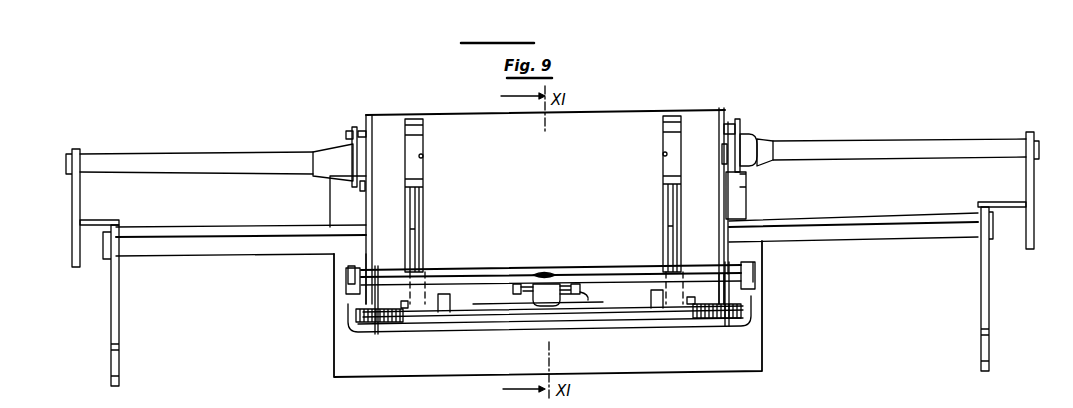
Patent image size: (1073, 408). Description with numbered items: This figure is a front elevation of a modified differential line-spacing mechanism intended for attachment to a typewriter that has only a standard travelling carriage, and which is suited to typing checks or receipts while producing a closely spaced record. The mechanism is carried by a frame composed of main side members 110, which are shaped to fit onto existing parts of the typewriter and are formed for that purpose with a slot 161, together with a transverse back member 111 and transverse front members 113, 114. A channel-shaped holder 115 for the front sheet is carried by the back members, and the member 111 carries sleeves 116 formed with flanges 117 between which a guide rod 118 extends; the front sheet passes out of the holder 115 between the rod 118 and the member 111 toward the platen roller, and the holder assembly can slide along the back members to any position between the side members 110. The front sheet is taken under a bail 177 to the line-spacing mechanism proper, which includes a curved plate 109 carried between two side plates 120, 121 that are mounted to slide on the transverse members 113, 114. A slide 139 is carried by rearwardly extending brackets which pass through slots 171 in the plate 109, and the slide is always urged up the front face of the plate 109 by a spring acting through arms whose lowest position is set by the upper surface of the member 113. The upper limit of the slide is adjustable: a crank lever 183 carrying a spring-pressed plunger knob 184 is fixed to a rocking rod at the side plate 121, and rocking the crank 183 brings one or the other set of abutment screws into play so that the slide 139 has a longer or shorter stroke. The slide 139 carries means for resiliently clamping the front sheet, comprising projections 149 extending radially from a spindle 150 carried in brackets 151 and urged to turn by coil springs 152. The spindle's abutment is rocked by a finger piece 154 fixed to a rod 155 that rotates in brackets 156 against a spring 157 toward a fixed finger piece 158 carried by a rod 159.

The curved plate 109 is at (645, 108).
The main side members 110 is at (68, 194).
The transverse back member 111 is at (887, 144).
The transverse front member 113 is at (271, 248).
The transverse front member 114 is at (271, 218).
The channel-shaped holder 115 is at (752, 352).
The sleeves 116 is at (324, 148).
The flanges 117 is at (346, 119).
The guide rod 118 is at (353, 122).
The side plate 120 is at (366, 257).
The side plate 121 is at (716, 240).
The slide 139 is at (518, 260).
The projections 149 is at (442, 292).
The spindle 150 is at (476, 311).
The brackets 151 is at (345, 288).
The coil springs 152 is at (394, 315).
The finger piece 154 is at (549, 298).
The rod 155 is at (520, 293).
The brackets 156 is at (506, 288).
The spring 157 is at (577, 288).
The fixed finger piece 158 is at (549, 260).
The rod 159 is at (640, 260).
The slot 161 is at (108, 360).
The slots 171 is at (416, 151).
The bail 177 is at (500, 336).
The crank lever 183 is at (714, 148).
The knob 184 is at (742, 140).